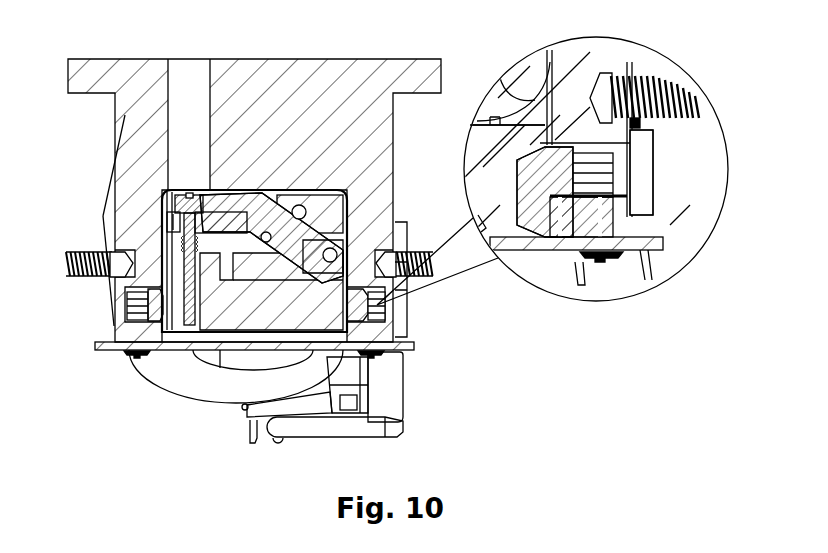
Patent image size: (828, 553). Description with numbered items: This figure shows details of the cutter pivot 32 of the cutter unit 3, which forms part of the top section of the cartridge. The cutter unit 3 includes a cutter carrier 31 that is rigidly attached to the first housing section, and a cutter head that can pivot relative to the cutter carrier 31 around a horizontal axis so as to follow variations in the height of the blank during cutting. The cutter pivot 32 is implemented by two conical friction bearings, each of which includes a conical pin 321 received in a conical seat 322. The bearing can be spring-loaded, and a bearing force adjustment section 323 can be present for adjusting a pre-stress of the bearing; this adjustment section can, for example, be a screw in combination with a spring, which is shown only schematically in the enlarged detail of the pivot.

The cutter unit 3 is at (449, 43).
The cutter carrier 31 is at (304, 62).
The cutter pivot 32 is at (711, 262).
The conical pin 321 is at (565, 183).
The conical seat 322 is at (484, 203).
The bearing force adjustment section 323 is at (622, 182).